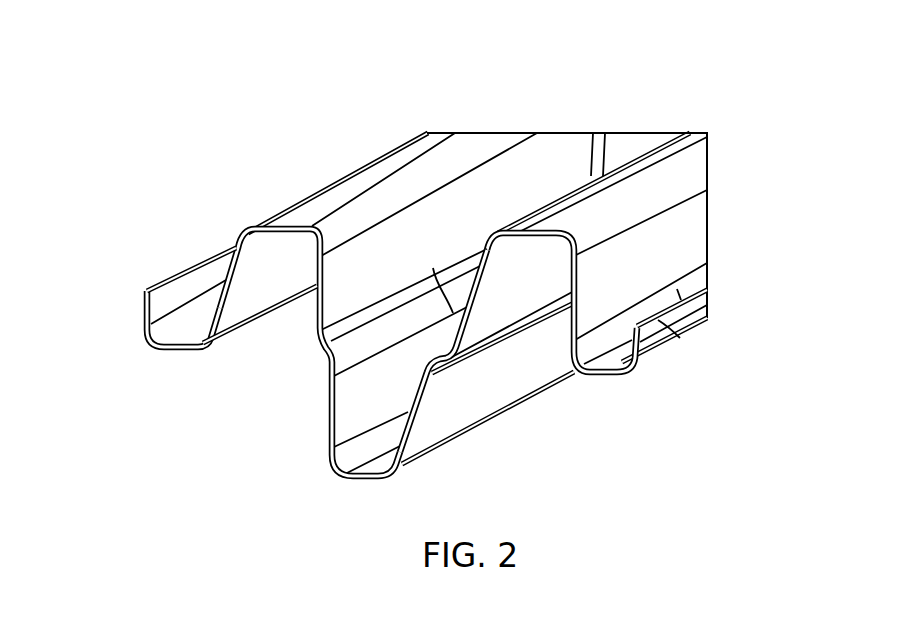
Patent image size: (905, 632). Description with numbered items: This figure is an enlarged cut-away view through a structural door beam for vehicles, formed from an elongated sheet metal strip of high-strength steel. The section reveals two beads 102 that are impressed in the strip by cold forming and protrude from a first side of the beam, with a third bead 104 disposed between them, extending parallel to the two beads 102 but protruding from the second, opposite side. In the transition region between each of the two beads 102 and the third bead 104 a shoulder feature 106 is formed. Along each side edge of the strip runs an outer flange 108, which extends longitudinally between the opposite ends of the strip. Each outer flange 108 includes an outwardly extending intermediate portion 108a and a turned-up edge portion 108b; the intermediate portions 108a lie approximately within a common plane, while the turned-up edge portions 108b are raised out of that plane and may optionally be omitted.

The bead 102 is at (703, 35).
The third bead 104 is at (354, 482).
The shoulder feature 106 is at (331, 352).
The outer flange 108 is at (147, 353).
The intermediate portion 108a is at (184, 345).
The turned-up edge portion 108b is at (147, 296).